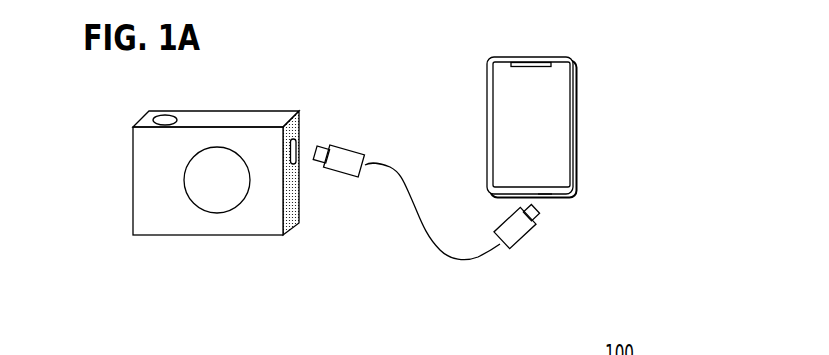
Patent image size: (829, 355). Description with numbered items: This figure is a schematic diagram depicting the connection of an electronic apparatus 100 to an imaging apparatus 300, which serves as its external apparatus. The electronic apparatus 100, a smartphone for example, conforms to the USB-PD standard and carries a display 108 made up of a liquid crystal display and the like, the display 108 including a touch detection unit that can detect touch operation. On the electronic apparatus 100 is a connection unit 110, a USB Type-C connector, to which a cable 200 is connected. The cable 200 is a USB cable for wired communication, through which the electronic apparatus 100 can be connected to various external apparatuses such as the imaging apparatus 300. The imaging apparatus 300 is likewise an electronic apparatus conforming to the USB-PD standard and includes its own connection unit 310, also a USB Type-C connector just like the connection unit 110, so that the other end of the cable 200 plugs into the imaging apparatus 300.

The electronic apparatus 100 is at (548, 56).
The display 108 is at (557, 109).
The connection unit 110 is at (544, 196).
The cable 200 is at (386, 159).
The imaging apparatus 300 is at (257, 115).
The connection unit 310 is at (294, 137).